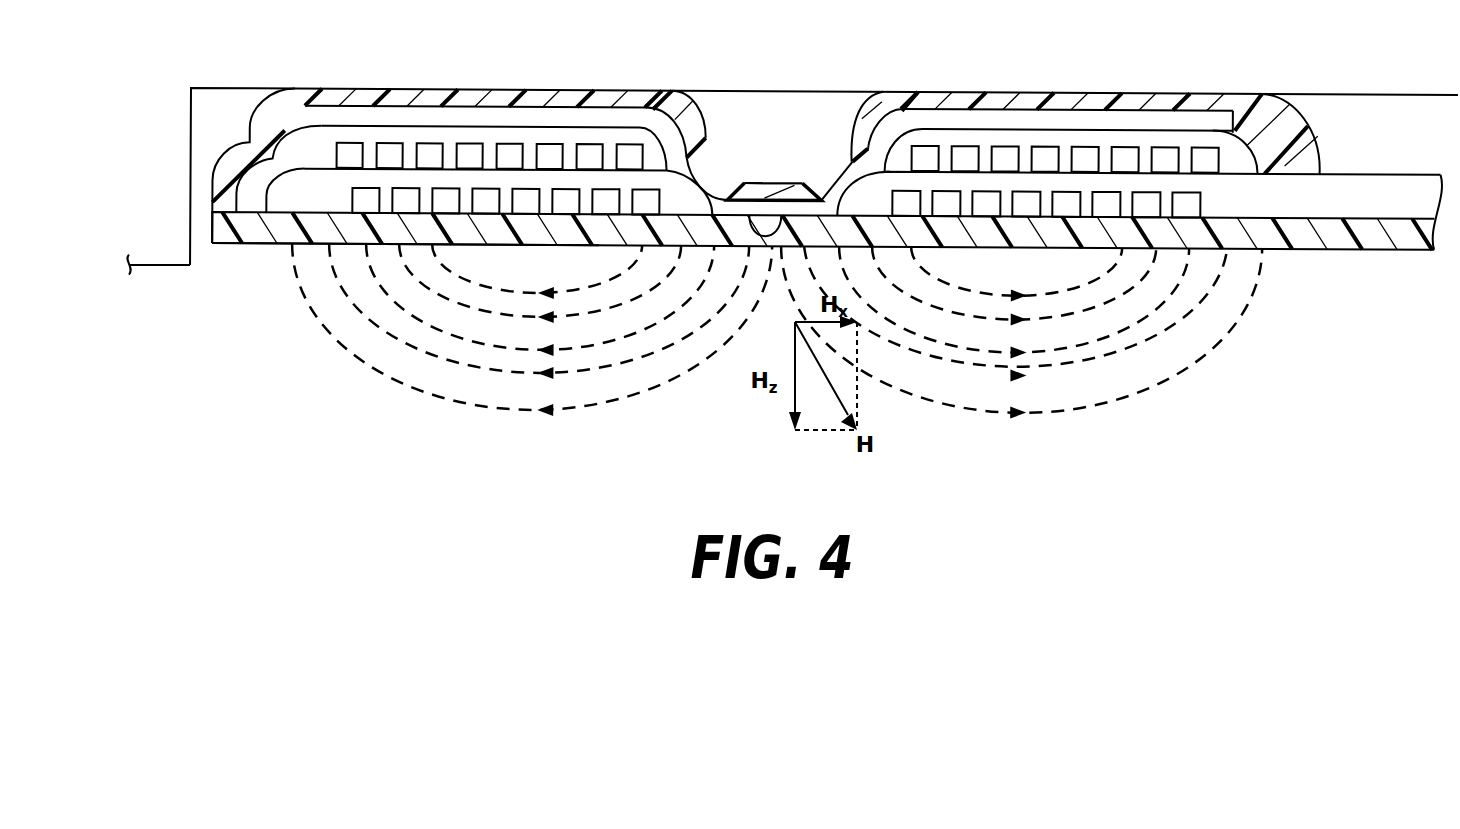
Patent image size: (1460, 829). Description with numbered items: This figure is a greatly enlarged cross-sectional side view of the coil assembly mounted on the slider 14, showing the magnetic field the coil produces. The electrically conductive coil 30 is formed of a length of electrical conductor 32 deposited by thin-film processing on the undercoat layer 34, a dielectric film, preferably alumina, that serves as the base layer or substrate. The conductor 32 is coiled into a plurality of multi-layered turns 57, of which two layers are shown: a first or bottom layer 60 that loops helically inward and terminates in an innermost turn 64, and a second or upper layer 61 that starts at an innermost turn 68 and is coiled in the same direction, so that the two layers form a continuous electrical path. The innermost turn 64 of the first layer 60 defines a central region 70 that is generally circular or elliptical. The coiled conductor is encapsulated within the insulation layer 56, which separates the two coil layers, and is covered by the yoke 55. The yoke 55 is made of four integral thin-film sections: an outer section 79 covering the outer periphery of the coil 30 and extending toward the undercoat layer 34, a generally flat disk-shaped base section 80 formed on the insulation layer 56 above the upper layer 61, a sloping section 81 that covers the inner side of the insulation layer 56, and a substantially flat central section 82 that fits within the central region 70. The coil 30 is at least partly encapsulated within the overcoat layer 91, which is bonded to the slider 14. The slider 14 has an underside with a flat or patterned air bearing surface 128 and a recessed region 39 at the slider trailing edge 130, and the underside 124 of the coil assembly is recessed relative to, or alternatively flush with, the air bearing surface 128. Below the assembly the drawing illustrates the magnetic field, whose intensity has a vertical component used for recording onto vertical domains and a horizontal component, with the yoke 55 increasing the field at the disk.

The slider 14 is at (198, 86).
The coil 30 is at (1025, 106).
The conductor 32 is at (967, 157).
The undercoat layer 34 is at (1318, 228).
The recessed region 39 is at (208, 243).
The yoke 55 is at (369, 82).
The insulation layer 56 is at (328, 143).
The multi-layered turns 57 is at (358, 199).
The first layer 60 is at (1218, 203).
The second layer 61 is at (1240, 158).
The innermost turn 64 is at (653, 200).
The innermost turn 68 is at (853, 150).
The central region 70 is at (781, 216).
The outer section 79 is at (292, 150).
The base section 80 is at (458, 113).
The sloping section 81 is at (703, 140).
The central section 82 is at (790, 190).
The overcoat layer 91 is at (420, 100).
The underside 124 is at (267, 244).
The air bearing surface 128 is at (157, 266).
The slider trailing edge 130 is at (1243, 91).